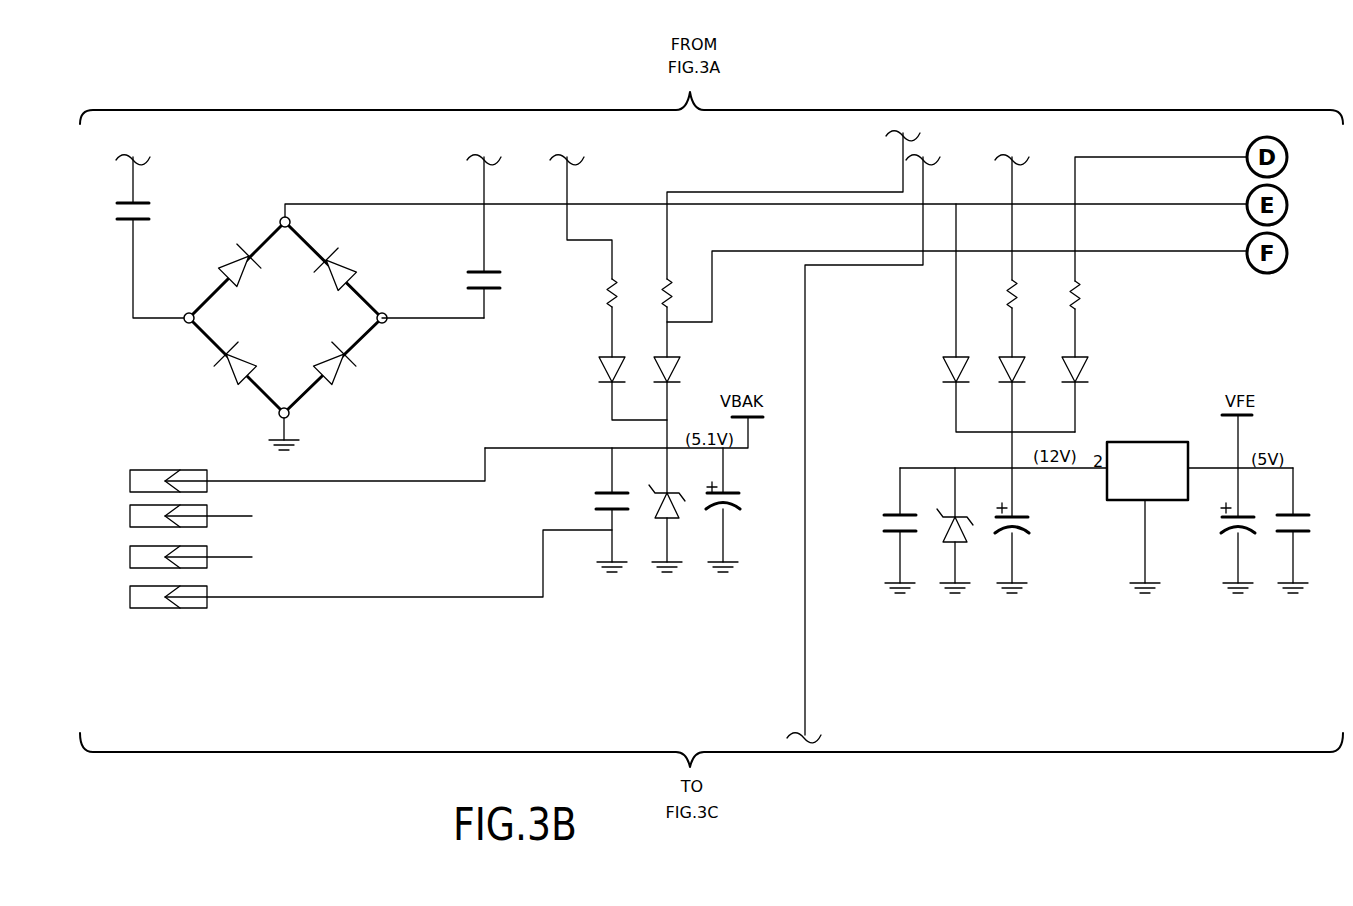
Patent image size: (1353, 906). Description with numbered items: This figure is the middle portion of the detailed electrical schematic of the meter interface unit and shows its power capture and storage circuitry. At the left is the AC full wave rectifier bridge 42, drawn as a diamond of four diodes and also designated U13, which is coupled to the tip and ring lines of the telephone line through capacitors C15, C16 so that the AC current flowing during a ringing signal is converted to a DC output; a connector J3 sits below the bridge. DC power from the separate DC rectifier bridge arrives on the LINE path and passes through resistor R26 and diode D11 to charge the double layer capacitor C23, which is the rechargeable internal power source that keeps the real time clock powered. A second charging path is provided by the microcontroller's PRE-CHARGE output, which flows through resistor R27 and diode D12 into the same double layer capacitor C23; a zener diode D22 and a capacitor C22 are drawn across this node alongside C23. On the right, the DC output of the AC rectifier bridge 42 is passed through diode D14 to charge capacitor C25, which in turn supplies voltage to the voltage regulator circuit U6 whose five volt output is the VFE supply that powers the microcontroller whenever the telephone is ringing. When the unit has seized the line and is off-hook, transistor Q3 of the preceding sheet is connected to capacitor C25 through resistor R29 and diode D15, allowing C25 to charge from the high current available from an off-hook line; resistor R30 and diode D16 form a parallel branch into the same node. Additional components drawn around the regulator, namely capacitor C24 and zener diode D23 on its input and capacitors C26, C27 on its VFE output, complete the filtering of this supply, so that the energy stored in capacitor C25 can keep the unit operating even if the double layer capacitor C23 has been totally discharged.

The AC full wave rectifier bridge 42 is at (666, 327).
The capacitor C15 is at (171, 237).
The bridge rectifier DB107G-S U13 is at (708, 327).
The capacitor C16 is at (445, 237).
The connector J3 is at (371, 527).
The resistor R26 is at (588, 257).
The diode D11 is at (595, 388).
The resistor R27 is at (766, 245).
The diode D12 is at (950, 372).
The zener diode D22 is at (668, 559).
The capacitor C22 is at (591, 510).
The double layer capacitor C23 is at (752, 510).
The diode D14 is at (970, 318).
The resistor R29 is at (1029, 257).
The diode D15 is at (1003, 367).
The resistor R30 is at (1158, 257).
The diode D16 is at (1116, 393).
The capacitor C24 is at (879, 530).
The zener diode D23 is at (958, 561).
The capacitor C25 is at (1044, 548).
The voltage regulator circuit U6 is at (1155, 505).
The capacitor C26 is at (1209, 504).
The capacitor C27 is at (1314, 530).